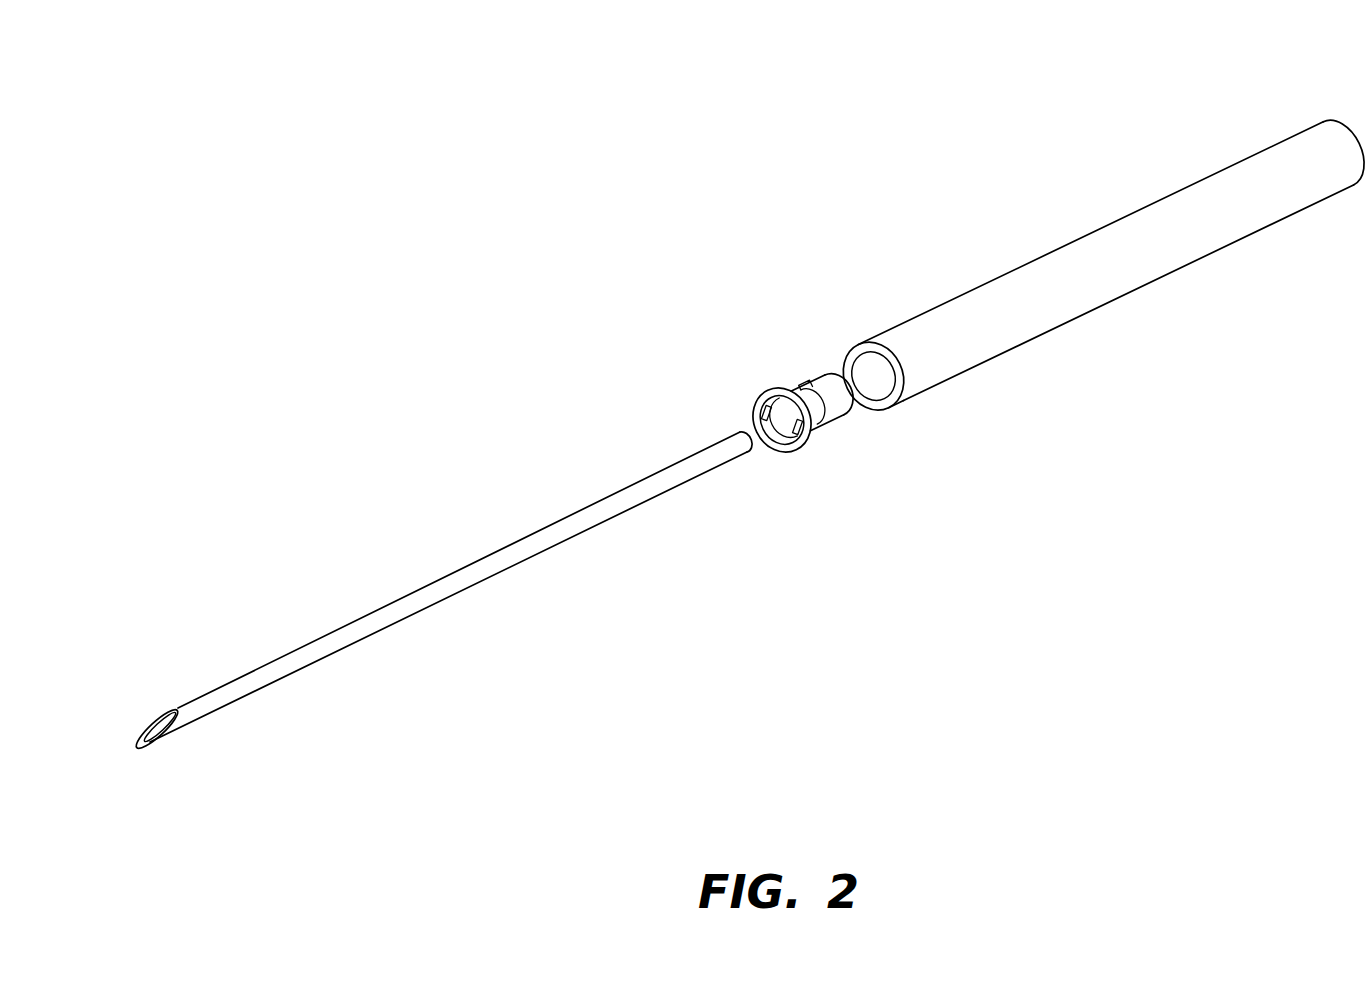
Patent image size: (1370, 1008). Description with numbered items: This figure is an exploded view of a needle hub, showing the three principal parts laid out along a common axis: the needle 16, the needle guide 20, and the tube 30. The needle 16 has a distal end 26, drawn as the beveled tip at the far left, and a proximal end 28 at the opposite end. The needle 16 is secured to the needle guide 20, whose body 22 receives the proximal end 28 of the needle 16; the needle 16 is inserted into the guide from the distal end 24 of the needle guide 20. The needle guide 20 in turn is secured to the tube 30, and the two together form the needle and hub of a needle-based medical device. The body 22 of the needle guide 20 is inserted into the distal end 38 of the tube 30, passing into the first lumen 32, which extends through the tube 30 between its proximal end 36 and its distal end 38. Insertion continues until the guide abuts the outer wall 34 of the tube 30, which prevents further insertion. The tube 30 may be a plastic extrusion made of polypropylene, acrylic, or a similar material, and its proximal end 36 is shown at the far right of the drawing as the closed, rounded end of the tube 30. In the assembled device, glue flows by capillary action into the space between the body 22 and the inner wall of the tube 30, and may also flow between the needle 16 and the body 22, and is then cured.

The needle 16 is at (450, 580).
The distal end 26 is at (153, 722).
The proximal end 28 is at (740, 430).
The needle guide 20 is at (758, 385).
The body 22 is at (817, 382).
The distal end 24 is at (797, 445).
The first lumen 32 is at (871, 377).
The distal end 38 is at (873, 414).
The outer wall 34 is at (900, 399).
The tube 30 is at (1110, 257).
The proximal end 36 is at (1323, 122).